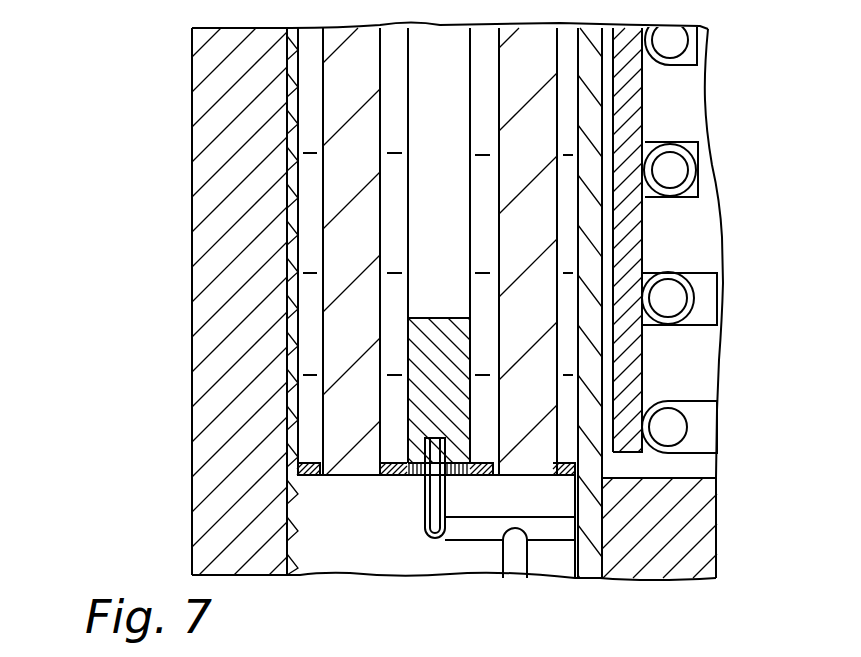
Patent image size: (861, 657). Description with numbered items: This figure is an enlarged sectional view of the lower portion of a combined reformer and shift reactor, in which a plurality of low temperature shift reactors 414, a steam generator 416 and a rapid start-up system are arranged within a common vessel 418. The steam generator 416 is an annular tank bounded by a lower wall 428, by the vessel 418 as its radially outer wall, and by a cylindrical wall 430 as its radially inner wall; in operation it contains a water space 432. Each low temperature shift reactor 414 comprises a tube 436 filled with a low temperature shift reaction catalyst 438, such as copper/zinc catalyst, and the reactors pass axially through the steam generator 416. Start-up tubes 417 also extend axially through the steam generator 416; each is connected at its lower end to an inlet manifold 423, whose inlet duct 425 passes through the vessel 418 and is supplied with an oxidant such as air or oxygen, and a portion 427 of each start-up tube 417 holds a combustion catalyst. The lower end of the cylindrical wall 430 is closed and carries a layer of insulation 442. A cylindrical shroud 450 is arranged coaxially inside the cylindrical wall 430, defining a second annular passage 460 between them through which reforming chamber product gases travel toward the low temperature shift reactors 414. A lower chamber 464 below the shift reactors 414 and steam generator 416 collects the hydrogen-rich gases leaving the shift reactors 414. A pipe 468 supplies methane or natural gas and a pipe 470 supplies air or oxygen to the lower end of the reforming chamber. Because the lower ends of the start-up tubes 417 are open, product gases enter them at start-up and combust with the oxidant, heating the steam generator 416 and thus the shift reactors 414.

The low temperature shift reactor 414 is at (345, 300).
The steam generator 416 is at (300, 437).
The start-up tube 417 is at (420, 160).
The vessel 418 is at (292, 88).
The inlet manifold 423 is at (473, 528).
The inlet duct 425 is at (515, 568).
The portion of start-up tube 427 is at (433, 353).
The lower wall 428 is at (390, 477).
The cylindrical wall 430 is at (587, 563).
The water space 432 is at (392, 122).
The tube 436 is at (322, 212).
The low temperature shift reaction catalyst 438 is at (332, 249).
The layer of insulation 442 is at (660, 567).
The cylindrical shroud 450 is at (632, 355).
The second annular passage 460 is at (607, 385).
The lower chamber 464 is at (367, 550).
The pipe 468 is at (703, 175).
The pipe 470 is at (703, 295).